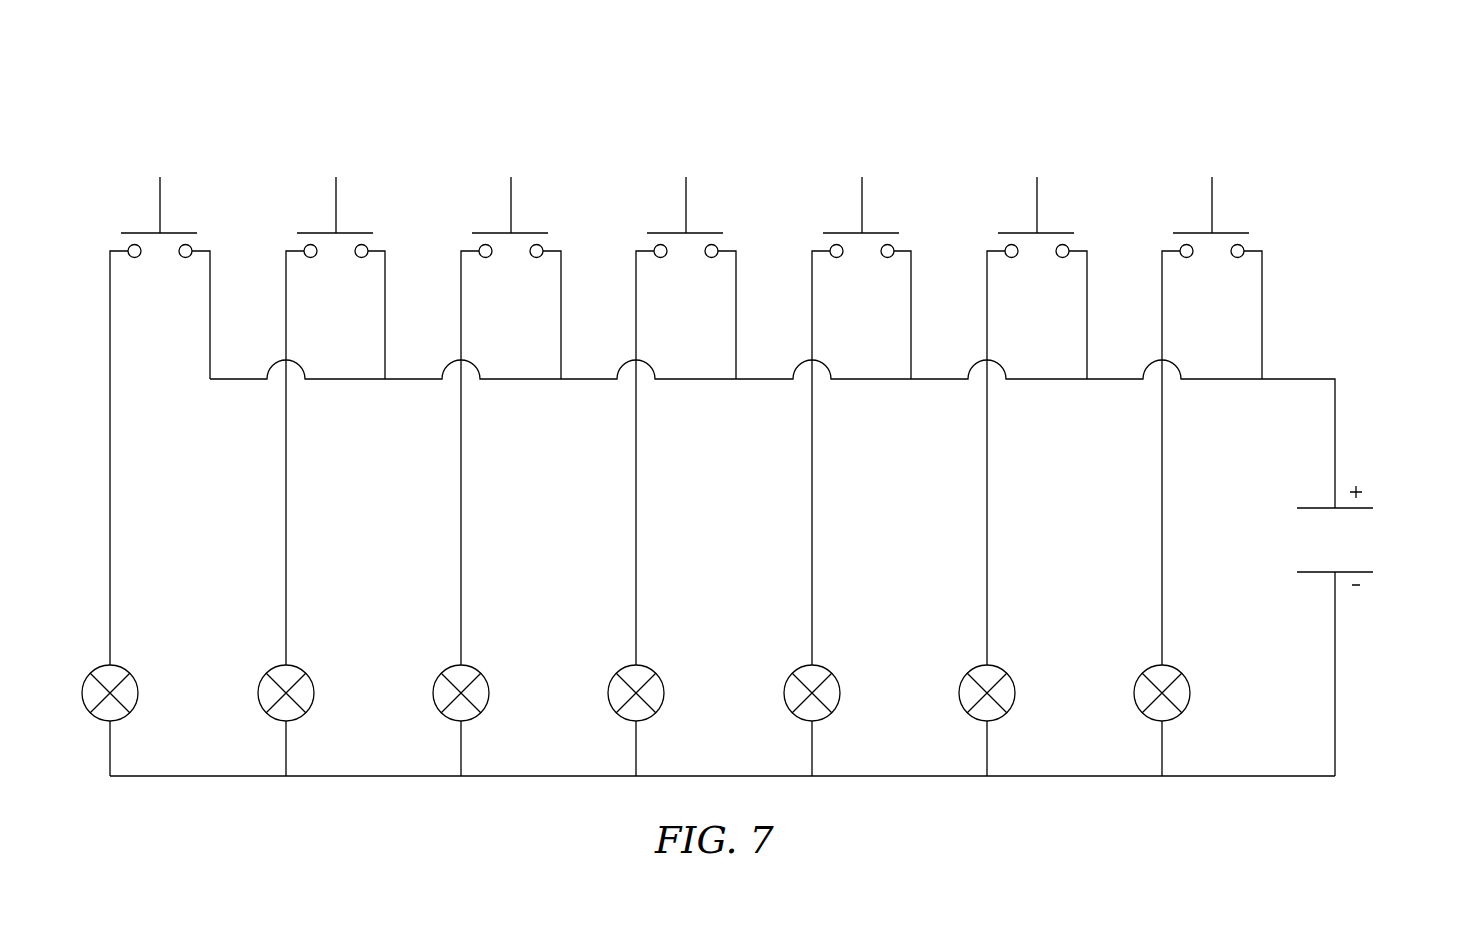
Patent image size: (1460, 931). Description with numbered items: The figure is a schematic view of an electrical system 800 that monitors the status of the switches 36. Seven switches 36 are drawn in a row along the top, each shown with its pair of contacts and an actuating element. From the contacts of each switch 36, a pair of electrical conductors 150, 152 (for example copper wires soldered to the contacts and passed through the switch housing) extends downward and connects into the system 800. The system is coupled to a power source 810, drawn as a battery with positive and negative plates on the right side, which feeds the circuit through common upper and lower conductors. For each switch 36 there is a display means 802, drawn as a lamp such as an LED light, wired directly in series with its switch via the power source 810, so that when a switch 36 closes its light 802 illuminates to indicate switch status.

The switch 36 is at (1268, 232).
The electrical conductor 150 is at (1162, 293).
The electrical conductor 152 is at (1262, 301).
The electrical system 800 is at (768, 450).
The display means 802 is at (1194, 661).
The power source 810 is at (1391, 540).